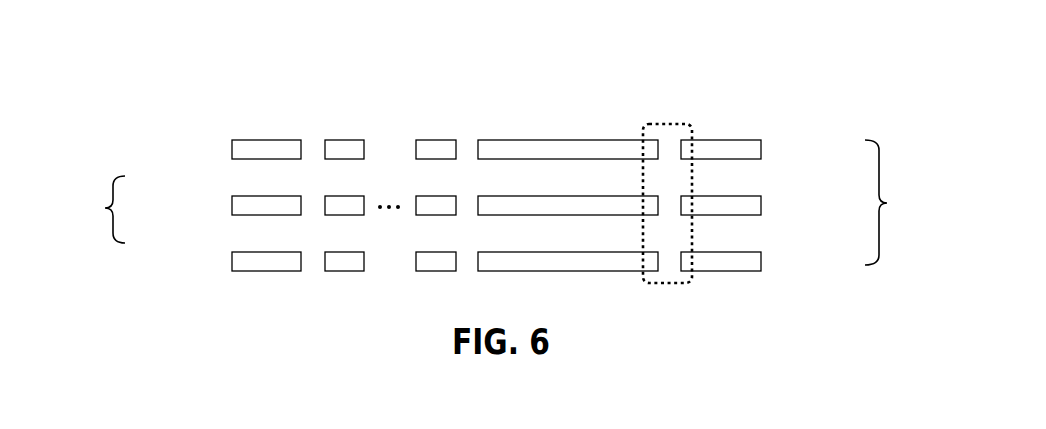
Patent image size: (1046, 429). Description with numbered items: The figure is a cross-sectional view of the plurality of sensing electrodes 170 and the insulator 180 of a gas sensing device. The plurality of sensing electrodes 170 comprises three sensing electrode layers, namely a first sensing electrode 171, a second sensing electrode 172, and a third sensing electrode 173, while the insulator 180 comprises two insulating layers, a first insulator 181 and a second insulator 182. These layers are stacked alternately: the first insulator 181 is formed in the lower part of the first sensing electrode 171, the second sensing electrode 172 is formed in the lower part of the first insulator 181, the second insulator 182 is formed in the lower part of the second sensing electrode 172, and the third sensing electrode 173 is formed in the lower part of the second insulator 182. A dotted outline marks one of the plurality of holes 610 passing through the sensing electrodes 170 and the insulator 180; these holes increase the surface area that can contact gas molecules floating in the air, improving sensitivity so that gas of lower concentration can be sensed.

The plurality of sensing electrodes 170 is at (897, 202).
The first sensing electrode 171 is at (770, 148).
The second sensing electrode 172 is at (770, 205).
The third sensing electrode 173 is at (770, 262).
The insulator 180 is at (95, 209).
The first insulator 181 is at (223, 183).
The second insulator 182 is at (223, 235).
The plurality of holes 610 is at (667, 191).